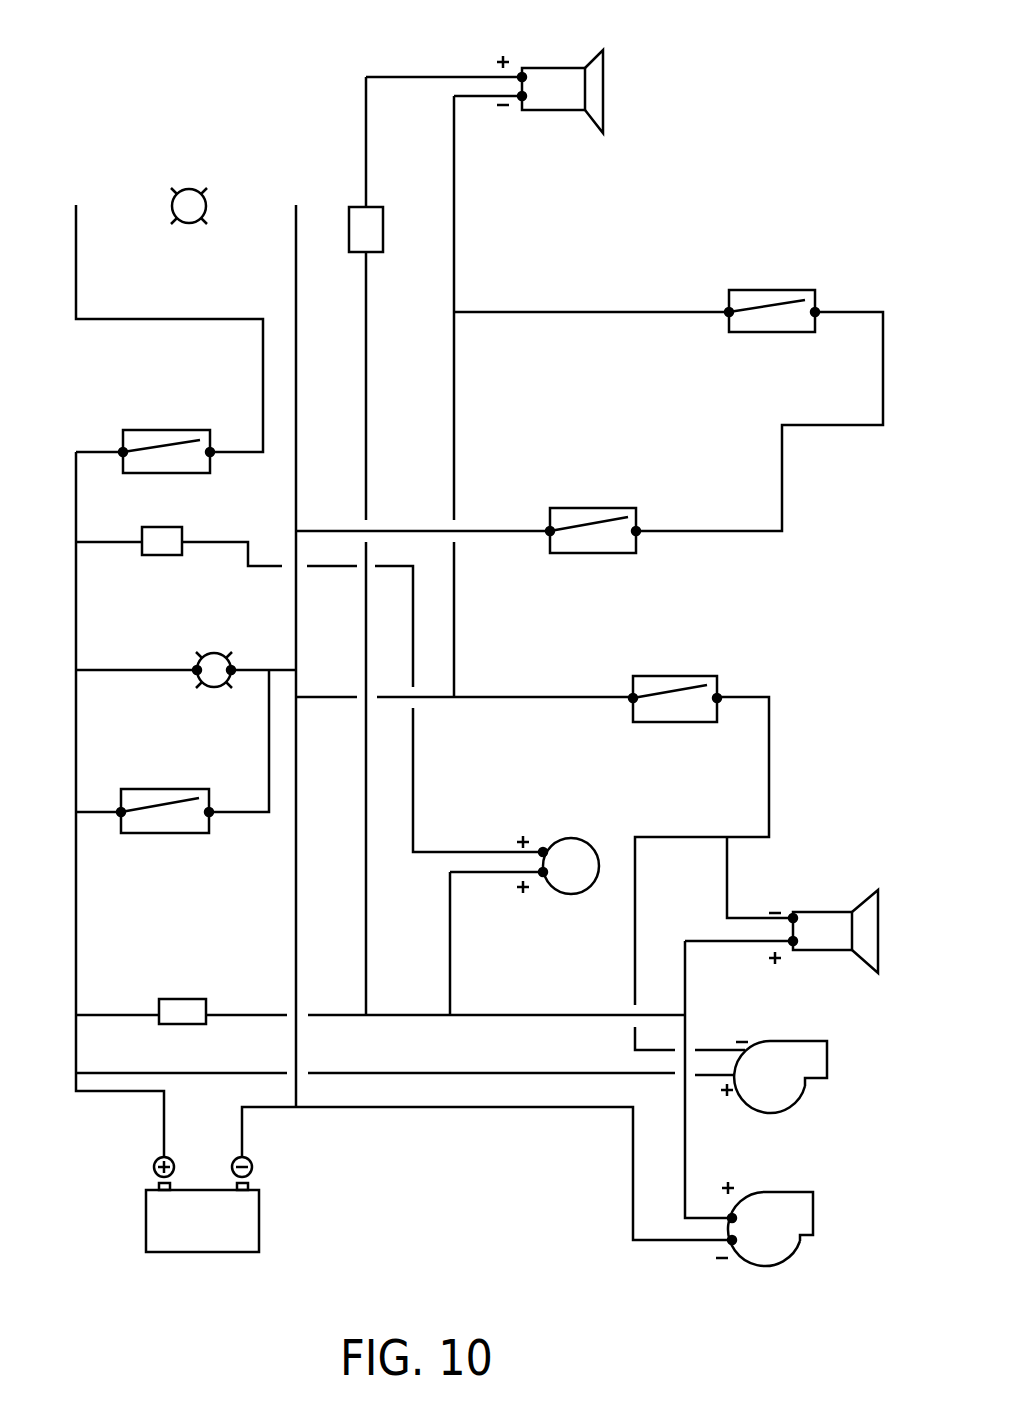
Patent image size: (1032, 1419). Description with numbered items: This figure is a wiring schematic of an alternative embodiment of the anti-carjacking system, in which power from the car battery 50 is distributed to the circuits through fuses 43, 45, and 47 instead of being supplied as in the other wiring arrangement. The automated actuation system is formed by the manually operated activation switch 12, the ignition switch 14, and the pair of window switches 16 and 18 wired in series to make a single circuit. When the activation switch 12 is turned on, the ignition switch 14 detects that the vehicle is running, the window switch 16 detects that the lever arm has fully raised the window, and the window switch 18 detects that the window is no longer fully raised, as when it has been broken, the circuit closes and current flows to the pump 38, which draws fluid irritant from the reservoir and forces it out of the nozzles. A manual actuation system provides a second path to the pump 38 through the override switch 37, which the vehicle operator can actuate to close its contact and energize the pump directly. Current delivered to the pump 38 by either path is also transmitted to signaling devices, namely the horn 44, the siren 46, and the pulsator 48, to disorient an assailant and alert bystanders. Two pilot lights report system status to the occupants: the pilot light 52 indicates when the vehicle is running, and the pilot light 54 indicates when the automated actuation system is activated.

The activation switch 12 is at (140, 430).
The ignition switch 14 is at (209, 800).
The window switch 16 is at (636, 515).
The window switch 18 is at (815, 297).
The override switch 37 is at (700, 676).
The pump 38 is at (800, 1240).
The fuse 43 is at (165, 555).
The horn 44 is at (560, 68).
The fuse 45 is at (185, 999).
The siren 46 is at (835, 912).
The fuse 47 is at (383, 215).
The pulsator 48 is at (553, 838).
The car battery 50 is at (165, 1252).
The pilot light 52 is at (197, 665).
The pilot light 54 is at (172, 197).